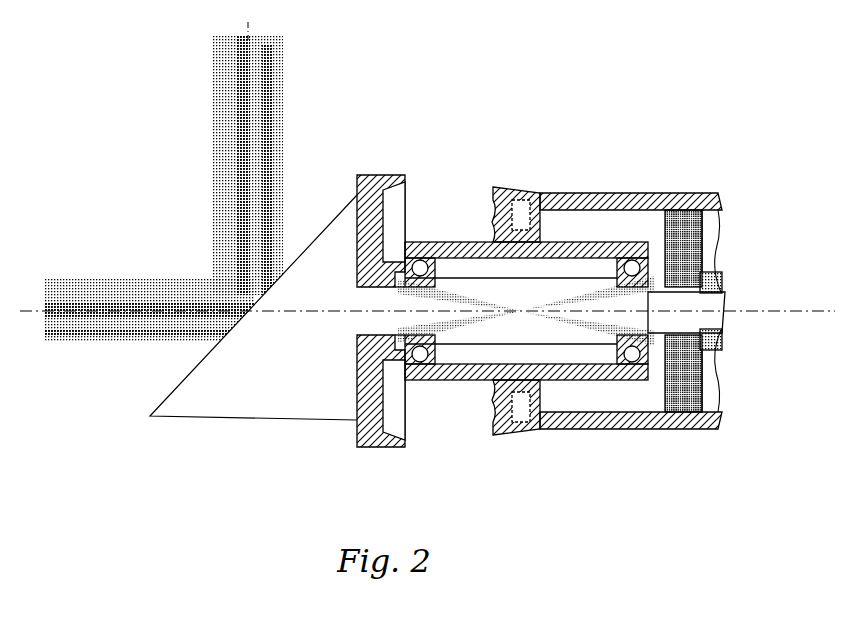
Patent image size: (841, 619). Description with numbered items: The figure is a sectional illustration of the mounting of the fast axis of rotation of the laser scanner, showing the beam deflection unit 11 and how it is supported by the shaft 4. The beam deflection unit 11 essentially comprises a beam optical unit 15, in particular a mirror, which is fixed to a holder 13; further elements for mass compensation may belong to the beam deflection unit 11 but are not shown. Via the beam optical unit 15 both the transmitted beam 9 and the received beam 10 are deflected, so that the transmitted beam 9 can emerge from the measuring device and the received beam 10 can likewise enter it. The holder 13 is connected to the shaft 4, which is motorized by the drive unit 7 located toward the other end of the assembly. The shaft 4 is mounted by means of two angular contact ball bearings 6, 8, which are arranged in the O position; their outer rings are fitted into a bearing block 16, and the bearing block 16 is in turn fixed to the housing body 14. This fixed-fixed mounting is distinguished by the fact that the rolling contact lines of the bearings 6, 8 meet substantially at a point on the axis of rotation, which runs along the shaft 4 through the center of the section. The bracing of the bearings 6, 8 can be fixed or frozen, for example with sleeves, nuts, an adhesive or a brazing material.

The shaft 4 is at (366, 325).
The angular contact ball bearing 6 is at (622, 250).
The drive unit 7 is at (680, 222).
The angular contact ball bearing 8 is at (418, 256).
The transmitted beam 9 is at (95, 308).
The received beam 10 is at (228, 68).
The beam deflection unit 11 is at (100, 410).
The holder 13 is at (372, 185).
The housing body 14 is at (607, 418).
The beam optical unit 15 is at (202, 405).
The bearing block 16 is at (465, 372).